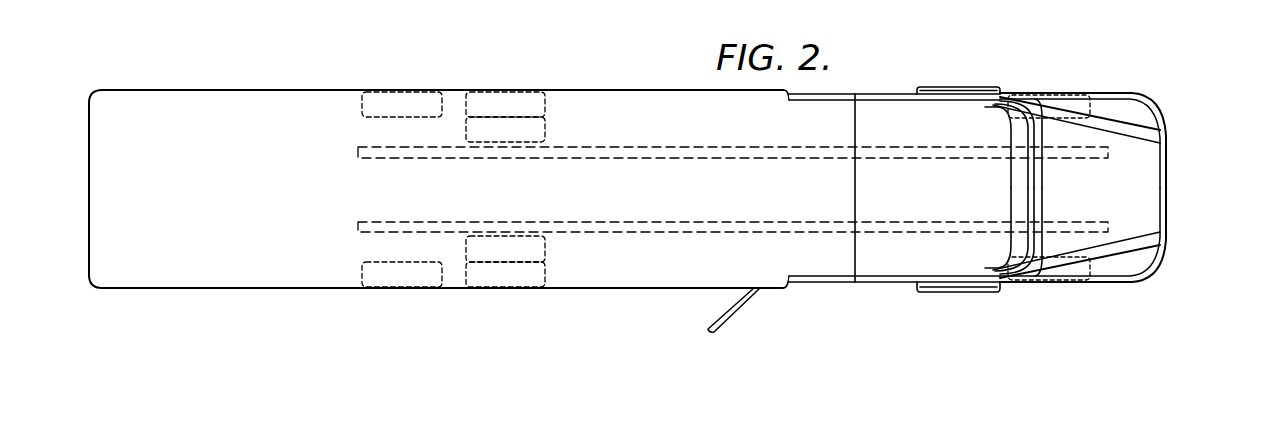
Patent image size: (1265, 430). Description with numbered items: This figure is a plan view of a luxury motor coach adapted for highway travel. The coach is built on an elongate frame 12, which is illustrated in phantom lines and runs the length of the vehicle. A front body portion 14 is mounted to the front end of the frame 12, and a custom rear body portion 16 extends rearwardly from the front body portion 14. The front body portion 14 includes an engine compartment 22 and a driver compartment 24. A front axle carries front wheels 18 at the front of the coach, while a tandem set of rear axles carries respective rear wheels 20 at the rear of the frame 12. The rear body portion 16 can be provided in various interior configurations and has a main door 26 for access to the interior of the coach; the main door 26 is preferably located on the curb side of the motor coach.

The elongate frame 12 is at (598, 148).
The front body portion 14 is at (1010, 174).
The rear body portion 16 is at (231, 284).
The front wheels 18 is at (1076, 86).
The rear wheels 20 is at (402, 103).
The engine compartment 22 is at (1138, 188).
The driver compartment 24 is at (962, 248).
The main door 26 is at (737, 313).